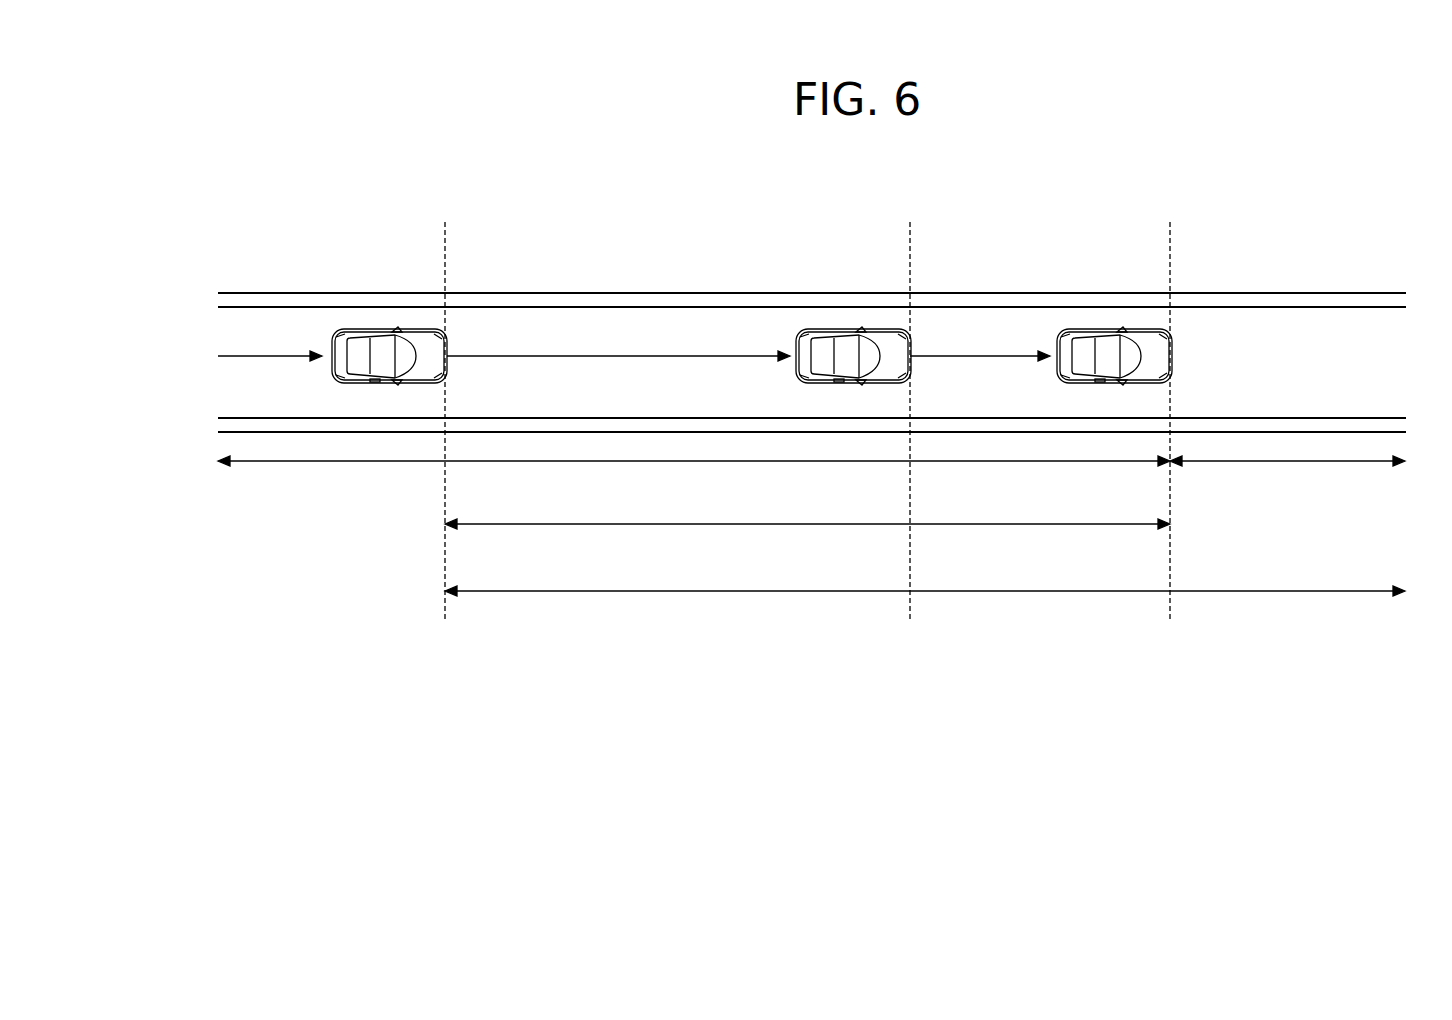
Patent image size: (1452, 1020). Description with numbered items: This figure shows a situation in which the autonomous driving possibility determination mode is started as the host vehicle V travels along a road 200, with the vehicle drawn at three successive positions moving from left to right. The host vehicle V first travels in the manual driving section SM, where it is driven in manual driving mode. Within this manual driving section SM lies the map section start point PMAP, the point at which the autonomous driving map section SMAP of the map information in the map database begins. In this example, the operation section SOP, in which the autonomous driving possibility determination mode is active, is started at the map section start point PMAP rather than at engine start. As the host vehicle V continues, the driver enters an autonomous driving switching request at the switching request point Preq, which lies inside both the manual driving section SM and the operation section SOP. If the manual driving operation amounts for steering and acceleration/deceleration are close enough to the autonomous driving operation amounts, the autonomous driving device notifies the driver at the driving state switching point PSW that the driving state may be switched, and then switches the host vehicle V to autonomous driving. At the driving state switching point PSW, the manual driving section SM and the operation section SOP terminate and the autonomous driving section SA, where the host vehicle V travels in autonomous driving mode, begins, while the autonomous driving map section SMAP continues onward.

The road 200 is at (248, 384).
The host vehicle V is at (379, 327).
The map section start point PMAP is at (445, 441).
The switching request point Preq is at (910, 441).
The driving state switching point PSW is at (1169, 441).
The manual driving section SM is at (682, 462).
The autonomous driving section SA is at (1299, 462).
The operation section SOP is at (756, 525).
The autonomous driving map section SMAP is at (827, 592).